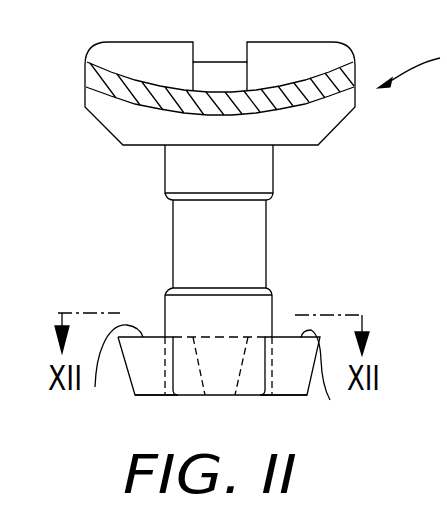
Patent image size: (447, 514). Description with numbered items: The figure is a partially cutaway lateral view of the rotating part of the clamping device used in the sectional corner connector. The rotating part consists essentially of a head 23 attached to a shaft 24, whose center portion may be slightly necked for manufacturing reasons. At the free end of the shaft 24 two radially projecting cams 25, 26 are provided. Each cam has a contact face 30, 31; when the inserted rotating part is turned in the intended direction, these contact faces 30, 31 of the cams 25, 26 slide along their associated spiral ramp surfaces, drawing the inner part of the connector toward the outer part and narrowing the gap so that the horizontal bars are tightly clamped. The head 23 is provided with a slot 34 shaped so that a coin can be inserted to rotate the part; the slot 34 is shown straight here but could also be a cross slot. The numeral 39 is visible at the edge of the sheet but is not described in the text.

The head 23 is at (118, 118).
The shaft 24 is at (258, 171).
The cam 25 is at (150, 376).
The cam 26 is at (292, 378).
The contact face 30 is at (112, 374).
The contact face 31 is at (330, 384).
The slot 34 is at (156, 86).
The adjacent part 39 is at (435, 468).